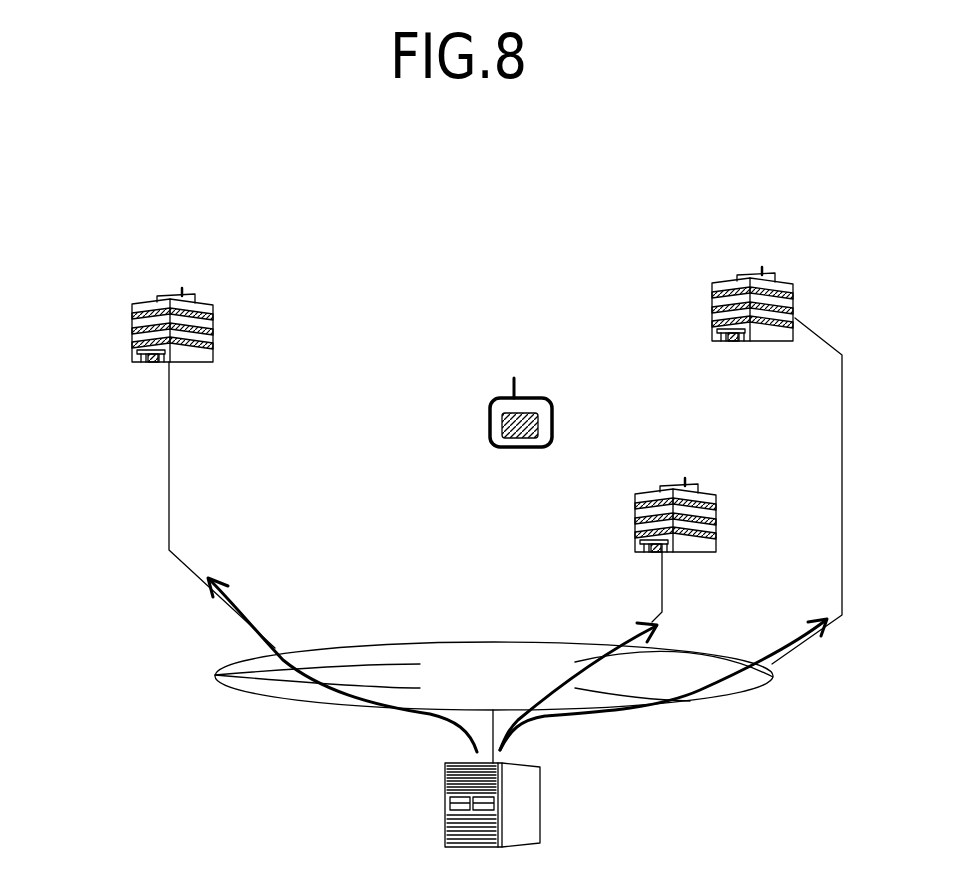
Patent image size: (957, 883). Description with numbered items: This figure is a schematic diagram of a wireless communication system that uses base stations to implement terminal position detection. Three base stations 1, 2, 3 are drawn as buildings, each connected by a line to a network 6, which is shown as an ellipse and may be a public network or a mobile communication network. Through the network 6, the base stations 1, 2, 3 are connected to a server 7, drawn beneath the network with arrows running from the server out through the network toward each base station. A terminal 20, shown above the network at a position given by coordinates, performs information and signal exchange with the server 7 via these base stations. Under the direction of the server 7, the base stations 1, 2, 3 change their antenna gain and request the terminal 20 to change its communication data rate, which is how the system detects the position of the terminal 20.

The base station 1 is at (795, 283).
The base station 2 is at (708, 553).
The base station 3 is at (131, 338).
The network 6 is at (352, 643).
The server 7 is at (443, 802).
The terminal 20 is at (498, 443).